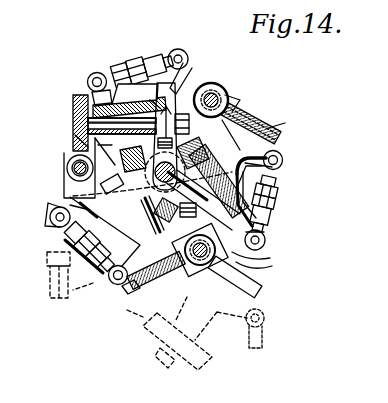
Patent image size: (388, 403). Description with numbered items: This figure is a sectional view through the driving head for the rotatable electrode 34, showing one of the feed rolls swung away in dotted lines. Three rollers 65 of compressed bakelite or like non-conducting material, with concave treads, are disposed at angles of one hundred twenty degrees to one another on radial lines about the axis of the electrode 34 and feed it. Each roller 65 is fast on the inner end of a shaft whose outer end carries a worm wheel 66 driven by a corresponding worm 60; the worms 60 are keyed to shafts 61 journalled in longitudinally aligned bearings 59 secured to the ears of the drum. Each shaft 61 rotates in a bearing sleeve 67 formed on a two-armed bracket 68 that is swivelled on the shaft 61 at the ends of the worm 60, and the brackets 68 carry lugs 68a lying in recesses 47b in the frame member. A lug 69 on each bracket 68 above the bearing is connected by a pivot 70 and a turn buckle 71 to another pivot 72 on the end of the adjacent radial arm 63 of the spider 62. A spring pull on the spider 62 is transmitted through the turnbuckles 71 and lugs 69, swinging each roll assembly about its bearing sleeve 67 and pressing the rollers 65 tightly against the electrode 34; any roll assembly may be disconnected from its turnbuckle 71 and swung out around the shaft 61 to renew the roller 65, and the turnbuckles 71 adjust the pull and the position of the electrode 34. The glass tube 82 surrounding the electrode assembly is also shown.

The electrode 34 is at (250, 178).
The recesses 47b is at (242, 171).
The bearings 59 is at (72, 130).
The worms 60 is at (66, 166).
The shafts 61 is at (216, 86).
The spider 62 is at (129, 101).
The radial arms 63 is at (270, 256).
The rollers 65 is at (186, 70).
The worm wheel 66 is at (73, 118).
The bearing sleeve 67 is at (228, 96).
The two-armed bracket 68 is at (240, 124).
The lugs 68a is at (295, 142).
The lug 69 is at (92, 92).
The pivot 70 is at (96, 72).
The turn buckle 71 is at (126, 70).
The pivot 72 is at (189, 62).
The glass tube 82 is at (135, 200).